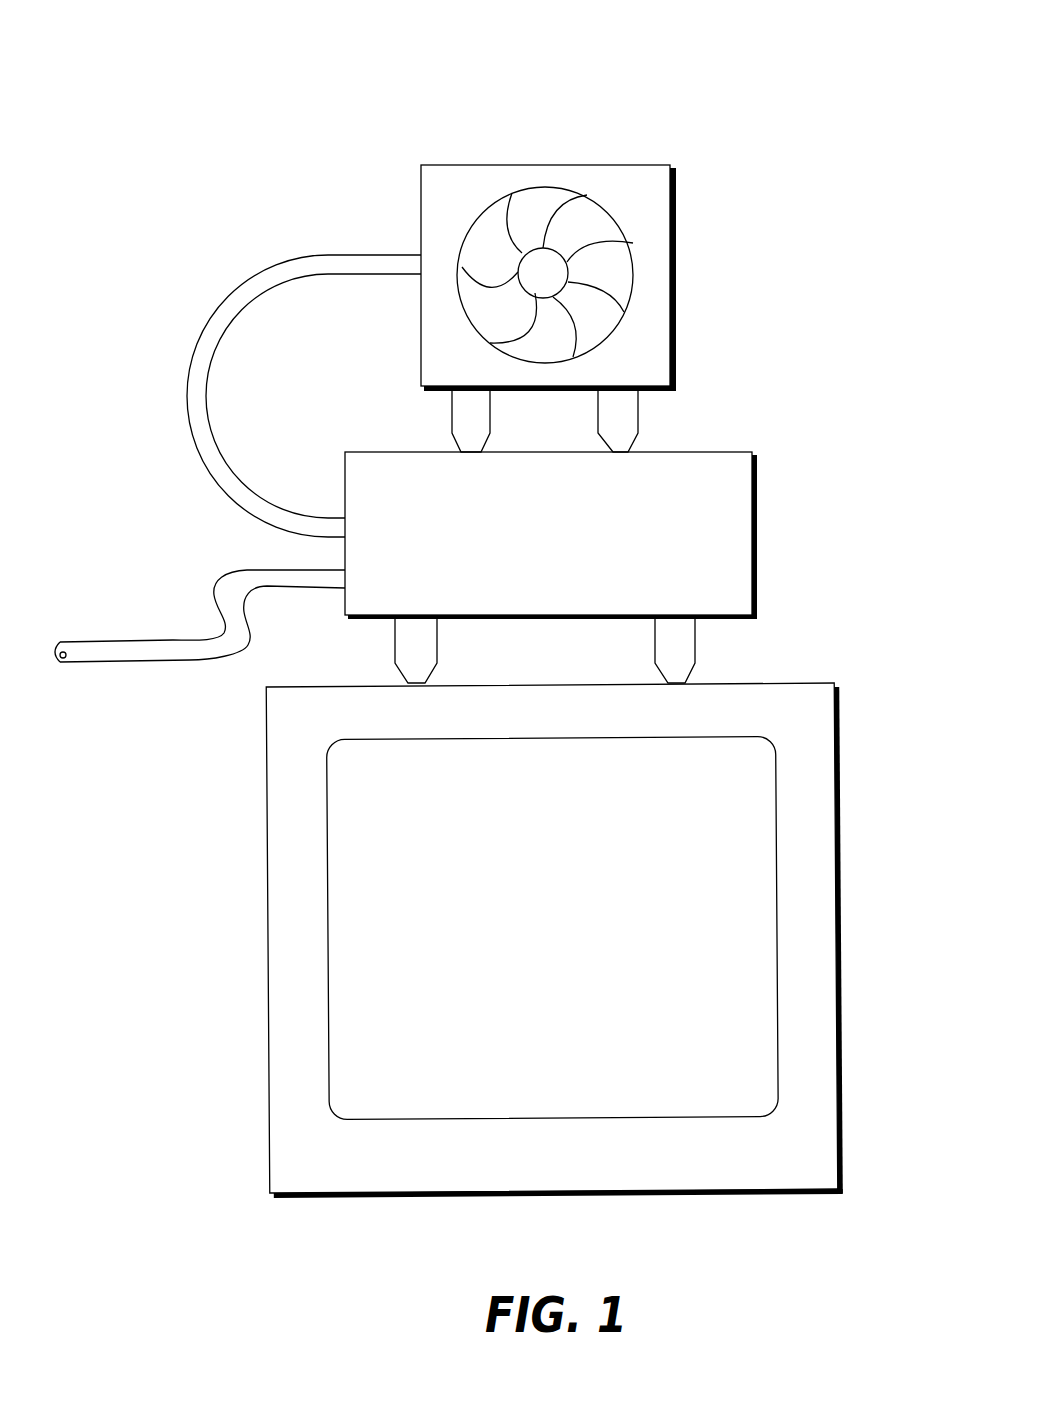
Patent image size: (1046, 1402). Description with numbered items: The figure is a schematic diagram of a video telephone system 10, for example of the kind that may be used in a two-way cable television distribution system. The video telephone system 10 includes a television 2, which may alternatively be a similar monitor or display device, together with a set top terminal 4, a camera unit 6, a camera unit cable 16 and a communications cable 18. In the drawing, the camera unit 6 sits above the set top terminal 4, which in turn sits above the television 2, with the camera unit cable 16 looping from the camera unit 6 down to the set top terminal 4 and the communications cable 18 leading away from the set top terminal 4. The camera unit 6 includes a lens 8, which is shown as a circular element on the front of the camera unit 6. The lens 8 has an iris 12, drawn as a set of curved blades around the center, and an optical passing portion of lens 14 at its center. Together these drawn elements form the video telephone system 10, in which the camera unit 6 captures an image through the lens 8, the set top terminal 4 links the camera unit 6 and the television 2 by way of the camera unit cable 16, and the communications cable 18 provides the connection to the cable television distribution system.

The television 2 is at (838, 796).
The set top terminal 4 is at (754, 537).
The camera unit 6 is at (672, 186).
The lens 8 is at (654, 219).
The video telephone system 10 is at (266, 180).
The iris 12 is at (583, 217).
The optical passing portion of lens 14 is at (538, 273).
The camera unit cable 16 is at (187, 396).
The communications cable 18 is at (175, 662).